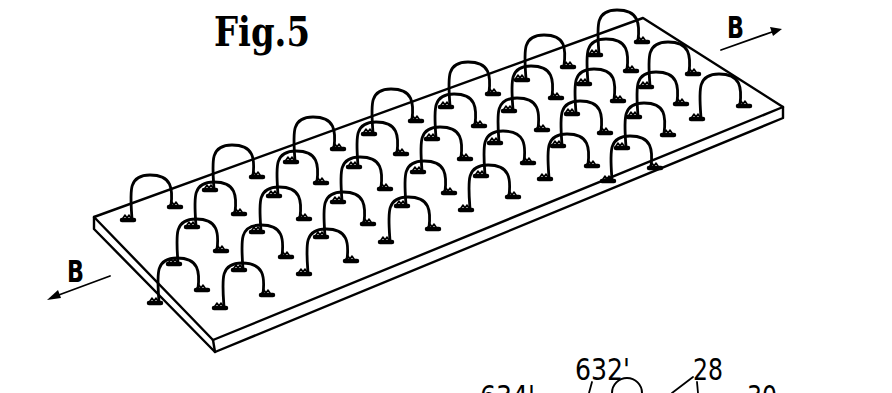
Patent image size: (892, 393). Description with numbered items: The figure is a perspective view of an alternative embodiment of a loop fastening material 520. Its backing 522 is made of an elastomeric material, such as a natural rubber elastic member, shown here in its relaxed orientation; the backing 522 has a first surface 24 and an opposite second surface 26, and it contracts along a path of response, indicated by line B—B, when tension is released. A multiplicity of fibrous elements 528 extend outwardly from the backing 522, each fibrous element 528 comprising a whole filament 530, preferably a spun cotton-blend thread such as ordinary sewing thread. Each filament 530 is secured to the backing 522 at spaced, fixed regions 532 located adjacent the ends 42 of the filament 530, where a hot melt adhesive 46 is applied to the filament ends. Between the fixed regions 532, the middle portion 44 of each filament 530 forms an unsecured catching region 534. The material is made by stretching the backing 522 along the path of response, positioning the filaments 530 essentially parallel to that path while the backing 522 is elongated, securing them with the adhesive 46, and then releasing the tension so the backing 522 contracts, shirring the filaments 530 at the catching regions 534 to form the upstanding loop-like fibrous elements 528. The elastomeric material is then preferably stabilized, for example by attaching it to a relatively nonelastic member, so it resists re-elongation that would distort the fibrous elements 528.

The loop fastening material 520 is at (140, 126).
The first surface 24 is at (763, 102).
The second surface 26 is at (767, 128).
The backing 522 is at (702, 147).
The middle portion 44 is at (138, 185).
The ends 42 is at (182, 200).
The hot melt adhesive 46 is at (166, 265).
The fibrous elements 528 is at (562, 52).
The filament 530 is at (610, 153).
The fixed regions 532 is at (207, 308).
The unsecured catching region 534 is at (245, 290).